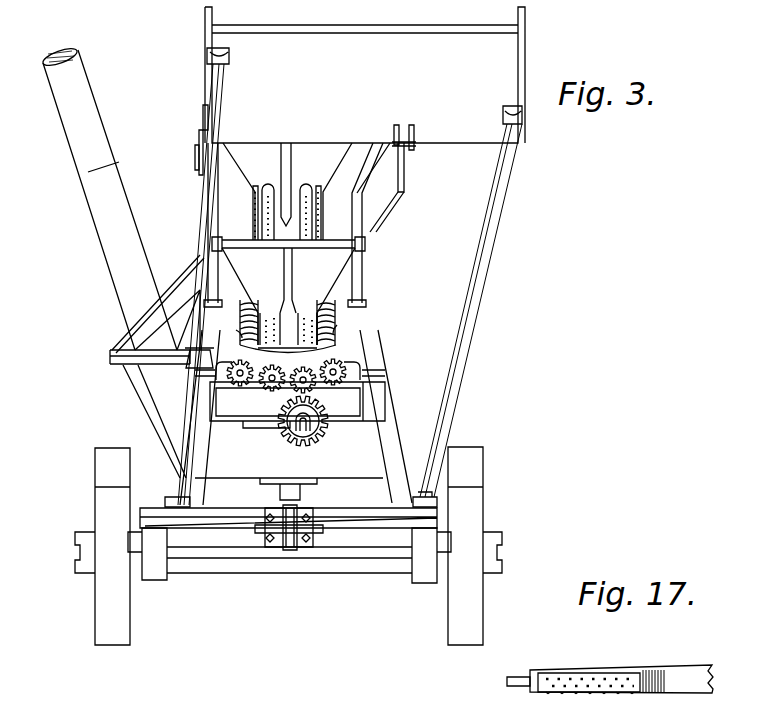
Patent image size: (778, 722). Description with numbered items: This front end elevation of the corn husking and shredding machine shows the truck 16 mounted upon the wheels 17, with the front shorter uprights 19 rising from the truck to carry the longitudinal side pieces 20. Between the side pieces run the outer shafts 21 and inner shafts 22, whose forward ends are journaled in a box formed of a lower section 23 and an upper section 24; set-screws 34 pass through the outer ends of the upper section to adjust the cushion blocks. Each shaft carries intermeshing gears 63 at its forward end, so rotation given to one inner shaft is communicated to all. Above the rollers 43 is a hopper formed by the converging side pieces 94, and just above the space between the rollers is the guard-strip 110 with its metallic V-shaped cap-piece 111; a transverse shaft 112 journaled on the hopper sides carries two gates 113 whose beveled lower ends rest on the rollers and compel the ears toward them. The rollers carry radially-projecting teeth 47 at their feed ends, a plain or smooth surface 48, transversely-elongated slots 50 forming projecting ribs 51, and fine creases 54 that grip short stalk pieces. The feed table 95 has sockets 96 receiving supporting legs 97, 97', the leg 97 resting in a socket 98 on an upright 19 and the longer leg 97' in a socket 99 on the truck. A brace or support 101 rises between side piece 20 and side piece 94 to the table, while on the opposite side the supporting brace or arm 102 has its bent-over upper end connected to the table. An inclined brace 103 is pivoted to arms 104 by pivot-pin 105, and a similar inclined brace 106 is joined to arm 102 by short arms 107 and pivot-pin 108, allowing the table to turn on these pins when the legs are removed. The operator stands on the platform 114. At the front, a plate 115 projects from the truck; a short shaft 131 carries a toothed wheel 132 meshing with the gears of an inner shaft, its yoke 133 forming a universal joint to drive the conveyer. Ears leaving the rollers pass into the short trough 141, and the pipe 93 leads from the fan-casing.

In FIG. 3, the table 95 is at (365, 75).
In FIG. 3, the sockets 96 is at (207, 57).
In FIG. 3, the supporting leg 97 is at (193, 284).
In FIG. 3, the longer supporting leg 97' is at (471, 310).
In FIG. 3, the arms 104 is at (203, 123).
In FIG. 3, the pivot-pin 105 is at (199, 142).
In FIG. 3, the upwardly and forwardly inclined brace 103 is at (195, 156).
In FIG. 3, the pipe 93 is at (95, 216).
In FIG. 3, the side pieces of hopper 94 is at (206, 263).
In FIG. 3, the metallic V-shaped cap-piece 111 is at (292, 172).
In FIG. 3, the gates 113 is at (288, 244).
In FIG. 3, the radially-projecting teeth 47 is at (254, 206).
In FIG. 17, the radially-projecting teeth 47 is at (586, 694).
In FIG. 3, the transverse shaft 112 is at (365, 244).
In FIG. 3, the guard-strip 110 is at (292, 315).
In FIG. 3, the rollers 43 is at (244, 306).
In FIG. 17, the rollers 43 is at (668, 667).
In FIG. 3, the transversely-elongated slots 50 is at (245, 328).
In FIG. 3, the projecting ribs 51 is at (333, 326).
In FIG. 3, the brace or support 101 is at (130, 332).
In FIG. 3, the short trough 141 is at (200, 325).
In FIG. 3, the socket 98 is at (182, 356).
In FIG. 3, the upper section 24 is at (215, 362).
In FIG. 3, the platform 114 is at (112, 356).
In FIG. 3, the front shorter uprights 19 is at (174, 467).
In FIG. 3, the socket 99 is at (437, 500).
In FIG. 3, the short arms 107 is at (397, 125).
In FIG. 3, the pivot-pin 108 is at (416, 140).
In FIG. 3, the supporting brace or arm 102 is at (404, 188).
In FIG. 3, the upwardly and forwardly inclined brace 106 is at (386, 203).
In FIG. 3, the set-screws 34 is at (205, 375).
In FIG. 3, the longitudinal side pieces 20 is at (202, 388).
In FIG. 3, the intermeshing gears 63 is at (200, 393).
In FIG. 3, the outer shafts 21 is at (240, 378).
In FIG. 17, the outer shafts 21 is at (514, 688).
In FIG. 3, the inner shafts 22 is at (270, 382).
In FIG. 3, the lower section 23 is at (225, 415).
In FIG. 3, the toothed wheel 132 is at (290, 442).
In FIG. 3, the short shaft 131 is at (306, 437).
In FIG. 3, the yoke 133 is at (312, 441).
In FIG. 3, the plate 115 is at (262, 480).
In FIG. 3, the truck 16 is at (222, 540).
In FIG. 3, the wheels 17 is at (95, 466).
In FIG. 17, the plain or smooth surface 48 is at (592, 672).
In FIG. 17, the fine creases 54 is at (658, 690).